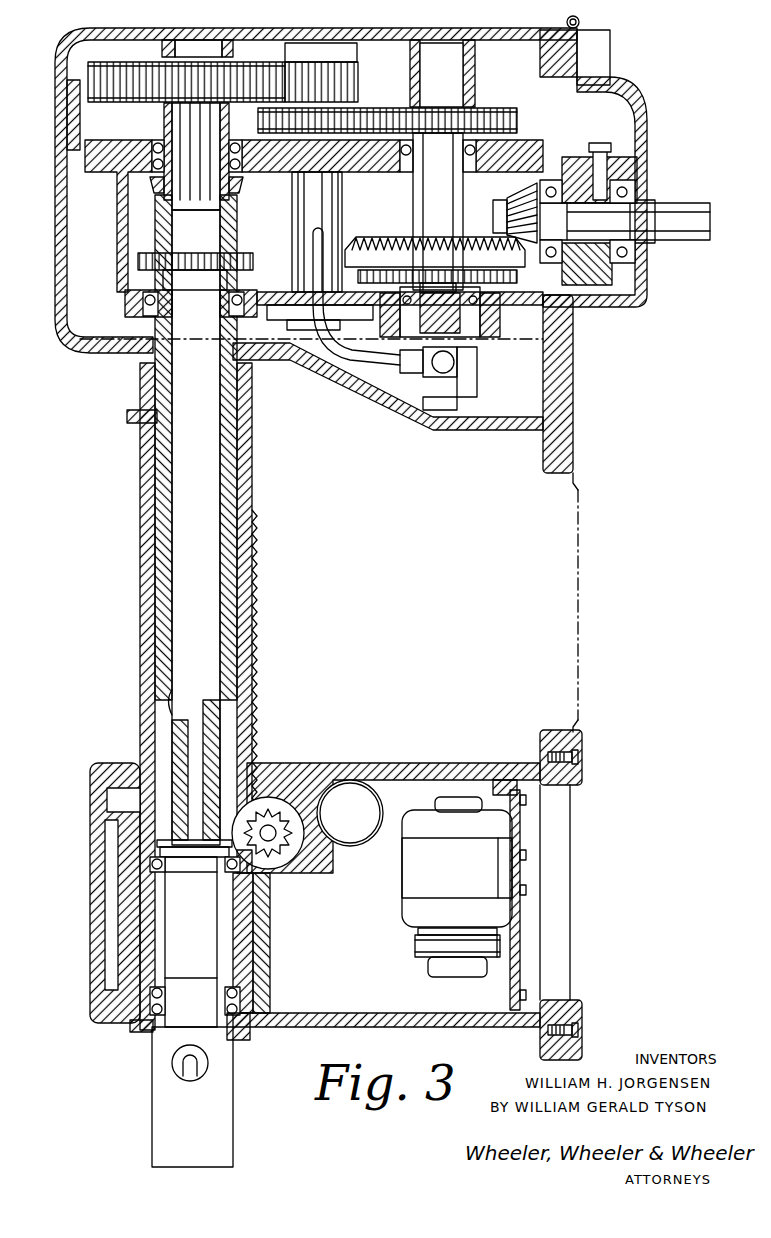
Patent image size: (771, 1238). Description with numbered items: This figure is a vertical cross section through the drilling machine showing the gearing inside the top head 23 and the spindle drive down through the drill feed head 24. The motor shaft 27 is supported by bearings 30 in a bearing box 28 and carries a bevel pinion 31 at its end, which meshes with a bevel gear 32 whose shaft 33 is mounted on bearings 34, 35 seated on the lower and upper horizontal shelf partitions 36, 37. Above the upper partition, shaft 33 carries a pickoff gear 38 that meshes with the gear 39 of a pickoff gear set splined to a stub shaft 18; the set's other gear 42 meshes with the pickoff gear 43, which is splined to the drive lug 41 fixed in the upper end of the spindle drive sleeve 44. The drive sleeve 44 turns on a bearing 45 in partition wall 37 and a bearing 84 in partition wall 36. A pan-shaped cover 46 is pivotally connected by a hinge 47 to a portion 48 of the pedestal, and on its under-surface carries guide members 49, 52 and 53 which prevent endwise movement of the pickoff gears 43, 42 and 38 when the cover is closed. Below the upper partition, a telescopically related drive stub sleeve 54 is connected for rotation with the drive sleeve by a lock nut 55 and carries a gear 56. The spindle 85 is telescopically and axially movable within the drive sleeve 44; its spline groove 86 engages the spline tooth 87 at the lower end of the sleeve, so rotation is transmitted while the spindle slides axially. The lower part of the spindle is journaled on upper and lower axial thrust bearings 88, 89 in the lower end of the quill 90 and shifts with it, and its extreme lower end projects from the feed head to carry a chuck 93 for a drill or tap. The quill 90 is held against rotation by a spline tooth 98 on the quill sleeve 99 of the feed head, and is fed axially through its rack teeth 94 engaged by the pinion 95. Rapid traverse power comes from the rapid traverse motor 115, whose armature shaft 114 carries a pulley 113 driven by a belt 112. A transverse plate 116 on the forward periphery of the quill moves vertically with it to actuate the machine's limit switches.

The stub shaft 18 is at (342, 193).
The top head 23 is at (67, 242).
The drill feed head 24 is at (320, 768).
The shaft 27 is at (682, 213).
The bearing box 28 is at (620, 185).
The bearings 30 is at (640, 185).
The bevel pinion 31 is at (520, 187).
The bevel gear 32 is at (366, 247).
The shaft 33 is at (423, 222).
The bearing 34 is at (497, 330).
The bearing 35 is at (410, 168).
The lower horizontal shelf partition 36 is at (287, 293).
The upper horizontal shelf partition 37 is at (240, 179).
The pickoff gear 38 is at (513, 100).
The gear 39 is at (345, 118).
The drive lug 41 is at (185, 117).
The gear 42 is at (342, 48).
The pickoff gear 43 is at (225, 80).
The spindle drive sleeve 44 is at (168, 128).
The bearing 45 is at (140, 173).
The pan-shaped cover 46 is at (520, 32).
The hinge 47 is at (580, 22).
The portion of the pedestal 48 is at (600, 62).
The guide member 49 is at (205, 48).
The guide member 52 is at (332, 50).
The guide member 53 is at (470, 75).
The drive stub sleeve 54 is at (240, 233).
The lock nut 55 is at (240, 184).
The gear 56 is at (240, 257).
The bearing 84 is at (120, 290).
The spindle 85 is at (200, 617).
The spline groove 86 is at (243, 670).
The spline tooth 87 is at (223, 733).
The upper axial thrust bearing 88 is at (240, 873).
The lower axial thrust bearing 89 is at (245, 1037).
The quill 90 is at (240, 957).
The chuck 93 is at (220, 1090).
The rack teeth 94 is at (243, 693).
The pinion 95 is at (273, 843).
The spline tooth 98 is at (137, 797).
The quill sleeve 99 is at (107, 840).
The belt 112 is at (413, 943).
The pulley 113 is at (410, 930).
The armature shaft 114 is at (433, 963).
The rapid traverse motor 115 is at (410, 883).
The transverse plate 116 is at (127, 413).